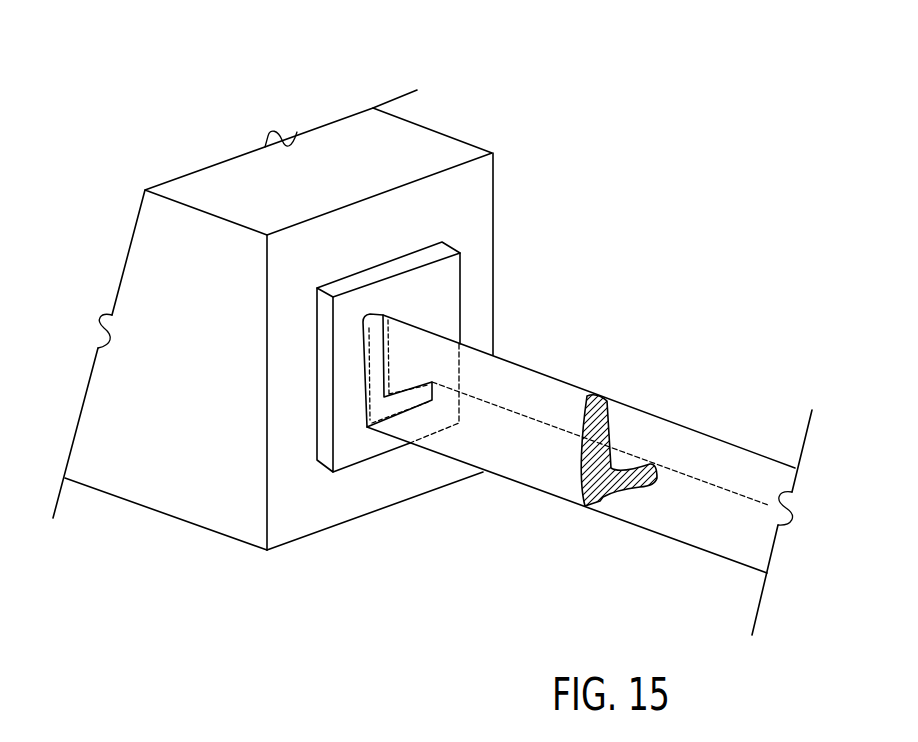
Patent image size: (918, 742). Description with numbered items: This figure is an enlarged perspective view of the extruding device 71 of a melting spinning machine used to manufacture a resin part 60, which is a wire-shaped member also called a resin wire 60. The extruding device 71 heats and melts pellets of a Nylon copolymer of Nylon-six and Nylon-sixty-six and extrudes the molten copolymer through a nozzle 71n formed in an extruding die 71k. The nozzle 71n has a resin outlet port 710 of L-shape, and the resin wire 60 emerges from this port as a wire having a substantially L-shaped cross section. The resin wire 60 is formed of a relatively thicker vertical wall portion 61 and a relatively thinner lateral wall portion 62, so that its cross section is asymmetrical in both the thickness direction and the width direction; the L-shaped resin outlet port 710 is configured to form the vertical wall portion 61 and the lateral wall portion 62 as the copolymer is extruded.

The extruding device 71 is at (273, 282).
The extruding die 71k is at (355, 150).
The nozzle 71n is at (388, 425).
The resin outlet port 710 is at (389, 407).
The resin part 60 is at (589, 456).
The vertical wall portion 61 is at (577, 467).
The lateral wall portion 62 is at (638, 475).